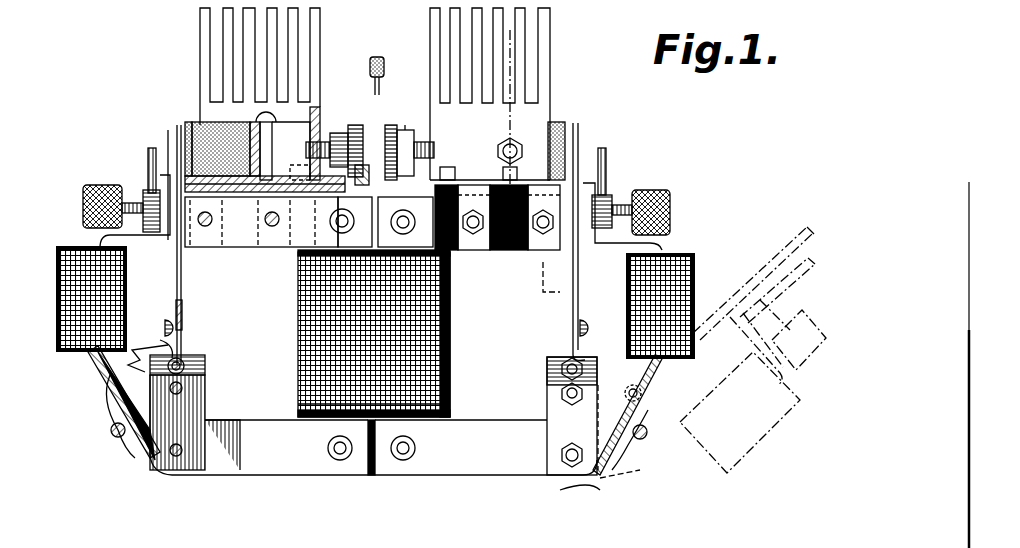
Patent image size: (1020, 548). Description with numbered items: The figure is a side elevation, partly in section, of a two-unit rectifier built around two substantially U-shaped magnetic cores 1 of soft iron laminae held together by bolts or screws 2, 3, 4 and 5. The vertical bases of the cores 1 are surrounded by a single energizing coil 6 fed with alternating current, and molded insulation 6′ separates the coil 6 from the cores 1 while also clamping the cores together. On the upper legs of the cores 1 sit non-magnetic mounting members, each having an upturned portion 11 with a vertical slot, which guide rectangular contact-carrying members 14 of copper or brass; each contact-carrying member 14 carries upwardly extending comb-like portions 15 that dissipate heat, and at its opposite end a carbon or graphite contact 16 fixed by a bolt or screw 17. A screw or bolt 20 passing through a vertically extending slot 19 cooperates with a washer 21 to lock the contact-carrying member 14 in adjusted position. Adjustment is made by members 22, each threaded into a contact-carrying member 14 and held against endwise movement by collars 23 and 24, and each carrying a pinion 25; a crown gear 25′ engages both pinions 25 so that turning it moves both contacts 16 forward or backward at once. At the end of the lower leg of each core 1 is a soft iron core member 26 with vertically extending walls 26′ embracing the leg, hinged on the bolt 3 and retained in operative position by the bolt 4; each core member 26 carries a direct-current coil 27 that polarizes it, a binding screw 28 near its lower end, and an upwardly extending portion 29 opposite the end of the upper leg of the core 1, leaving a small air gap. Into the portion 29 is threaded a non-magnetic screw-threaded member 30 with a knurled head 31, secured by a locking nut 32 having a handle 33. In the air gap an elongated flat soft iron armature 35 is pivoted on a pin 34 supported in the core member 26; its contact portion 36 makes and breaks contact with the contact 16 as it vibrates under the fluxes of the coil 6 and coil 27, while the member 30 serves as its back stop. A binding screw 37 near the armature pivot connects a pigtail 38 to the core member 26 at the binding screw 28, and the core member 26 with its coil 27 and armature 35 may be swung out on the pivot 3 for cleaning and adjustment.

The U-shaped magnetic cores 1 is at (296, 470).
The bolt or screw 2 is at (556, 526).
The bolt or screw 3 is at (172, 455).
The bolt or screw 4 is at (183, 389).
The bolt or screw 5 is at (562, 455).
The energizing coil 6 is at (450, 328).
The insulation 6′ is at (450, 410).
The upturned portion 11 is at (406, 128).
The contact-carrying member 14 is at (292, 106).
The comb-like portions 15 is at (228, 36).
The contact 16 is at (188, 125).
The bolt or screw 17 is at (522, 132).
The vertically extending slot 19 is at (314, 116).
The screw or bolt 20 is at (293, 164).
The washer 21 is at (283, 146).
The adjusting member 22 is at (322, 140).
The collar 23 is at (355, 128).
The collar 24 is at (370, 172).
The pinion 25 is at (352, 158).
The crown gear 25′ is at (363, 243).
The core member 26 is at (93, 365).
The vertically extending walls 26′ is at (205, 368).
The coil 27 is at (125, 272).
The binding screw 28 is at (112, 432).
The upwardly extending portion 29 is at (598, 135).
The screw-threaded member 30 is at (132, 200).
The knurled head 31 is at (86, 187).
The locking member or nut 32 is at (145, 190).
The handle 33 is at (148, 152).
The pin or bolt 34 is at (182, 362).
The armature 35 is at (183, 280).
The contact portion 36 is at (178, 130).
The binding screw 37 is at (166, 324).
The conducting wire or pigtail 38 is at (150, 352).